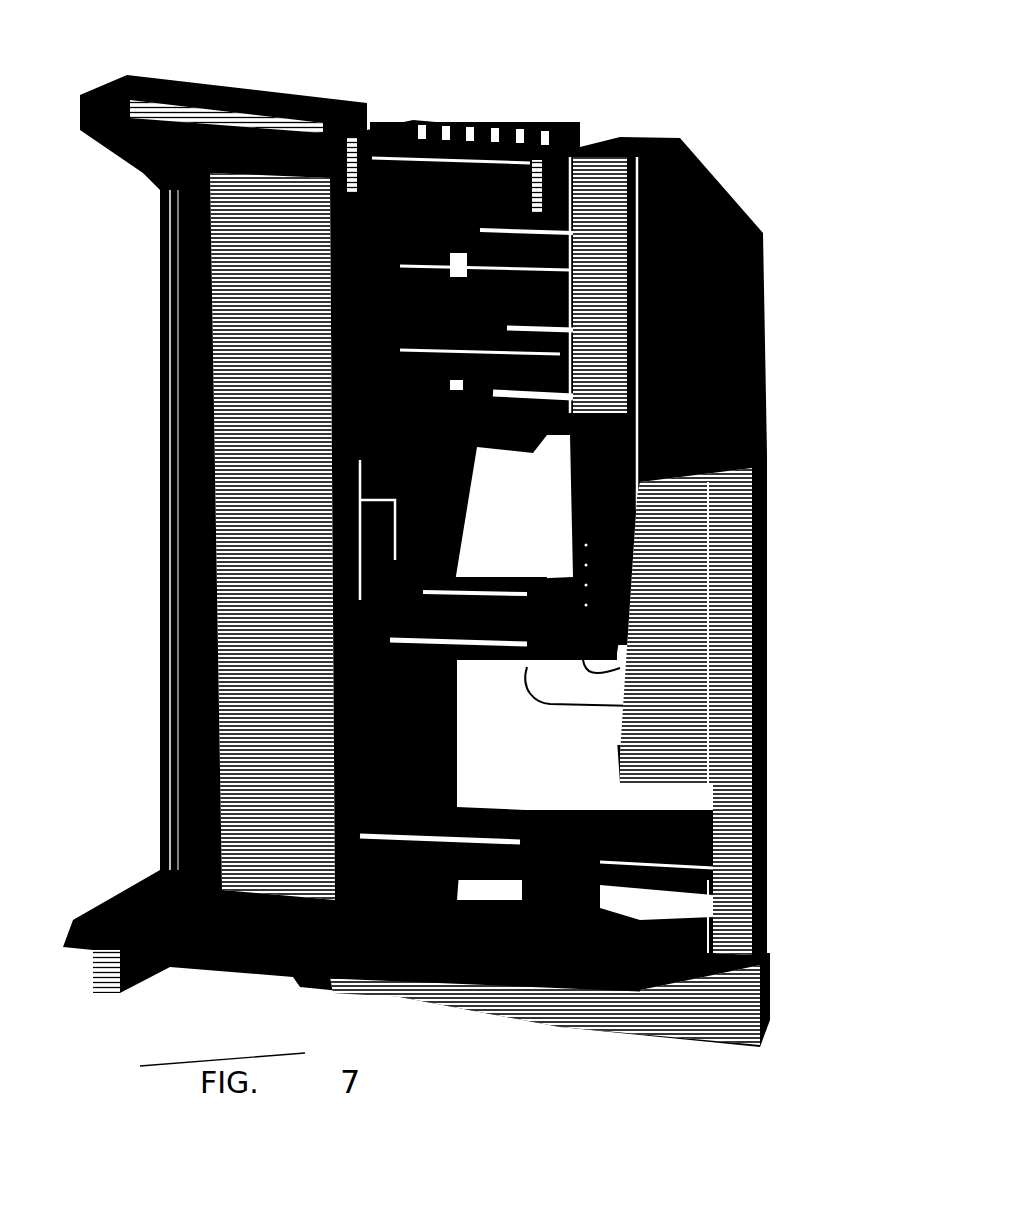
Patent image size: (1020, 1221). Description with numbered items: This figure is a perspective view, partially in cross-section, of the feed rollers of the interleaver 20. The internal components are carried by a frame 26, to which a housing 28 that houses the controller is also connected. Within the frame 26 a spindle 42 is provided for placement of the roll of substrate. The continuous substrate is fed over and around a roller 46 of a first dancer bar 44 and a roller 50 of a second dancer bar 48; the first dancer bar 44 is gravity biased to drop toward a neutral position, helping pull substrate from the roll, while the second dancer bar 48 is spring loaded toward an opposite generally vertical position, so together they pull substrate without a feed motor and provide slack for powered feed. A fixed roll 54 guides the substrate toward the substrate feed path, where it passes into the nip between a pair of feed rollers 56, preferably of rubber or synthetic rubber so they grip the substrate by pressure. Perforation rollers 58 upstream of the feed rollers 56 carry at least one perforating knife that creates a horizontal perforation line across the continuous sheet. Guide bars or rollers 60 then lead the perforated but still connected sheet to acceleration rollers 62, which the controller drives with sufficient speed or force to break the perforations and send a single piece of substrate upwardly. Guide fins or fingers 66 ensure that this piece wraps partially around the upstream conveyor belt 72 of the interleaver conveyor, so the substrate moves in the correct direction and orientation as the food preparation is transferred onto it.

The interleaver 20 is at (302, 97).
The frame 26 is at (753, 510).
The housing 28 is at (160, 827).
The spindle 42 is at (620, 827).
The first dancer bar 44 is at (335, 600).
The roller 46 is at (620, 707).
The second dancer bar 48 is at (633, 587).
The roller 50 is at (633, 667).
The fixed roll 54 is at (483, 582).
The feed rollers 56 is at (360, 365).
The perforation rollers 58 is at (345, 300).
The guide bars or rollers 60 is at (350, 252).
The acceleration rollers 62 is at (345, 236).
The guide fins or fingers 66 is at (443, 120).
The upstream conveyor belt 72 is at (397, 133).